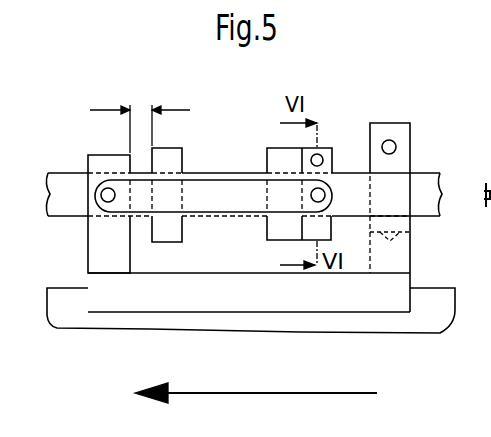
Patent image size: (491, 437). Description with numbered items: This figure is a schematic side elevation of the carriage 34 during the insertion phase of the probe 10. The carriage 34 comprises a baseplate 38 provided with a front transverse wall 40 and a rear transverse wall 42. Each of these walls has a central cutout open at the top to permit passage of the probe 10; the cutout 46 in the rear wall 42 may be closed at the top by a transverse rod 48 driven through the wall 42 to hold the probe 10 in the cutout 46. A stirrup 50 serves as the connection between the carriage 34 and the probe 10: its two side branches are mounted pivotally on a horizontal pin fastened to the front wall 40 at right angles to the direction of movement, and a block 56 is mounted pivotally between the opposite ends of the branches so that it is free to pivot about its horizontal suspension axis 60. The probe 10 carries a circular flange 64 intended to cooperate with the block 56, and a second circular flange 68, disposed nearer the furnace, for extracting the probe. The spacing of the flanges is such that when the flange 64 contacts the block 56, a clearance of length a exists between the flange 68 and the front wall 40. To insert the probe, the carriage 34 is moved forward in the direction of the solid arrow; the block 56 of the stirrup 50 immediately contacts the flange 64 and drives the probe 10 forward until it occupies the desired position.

The probe 10 is at (48, 174).
The carriage 34 is at (375, 113).
The baseplate 38 is at (450, 298).
The front transverse wall 40 is at (97, 243).
The rear transverse wall 42 is at (413, 259).
The cutout 46 is at (412, 235).
The transverse rod 48 is at (395, 142).
The stirrup 50 is at (208, 158).
The block 56 is at (317, 153).
The horizontal suspension axis 60 is at (329, 178).
The circular flange 64 is at (272, 148).
The second circular flange 68 is at (178, 148).
The clearance length a is at (140, 119).